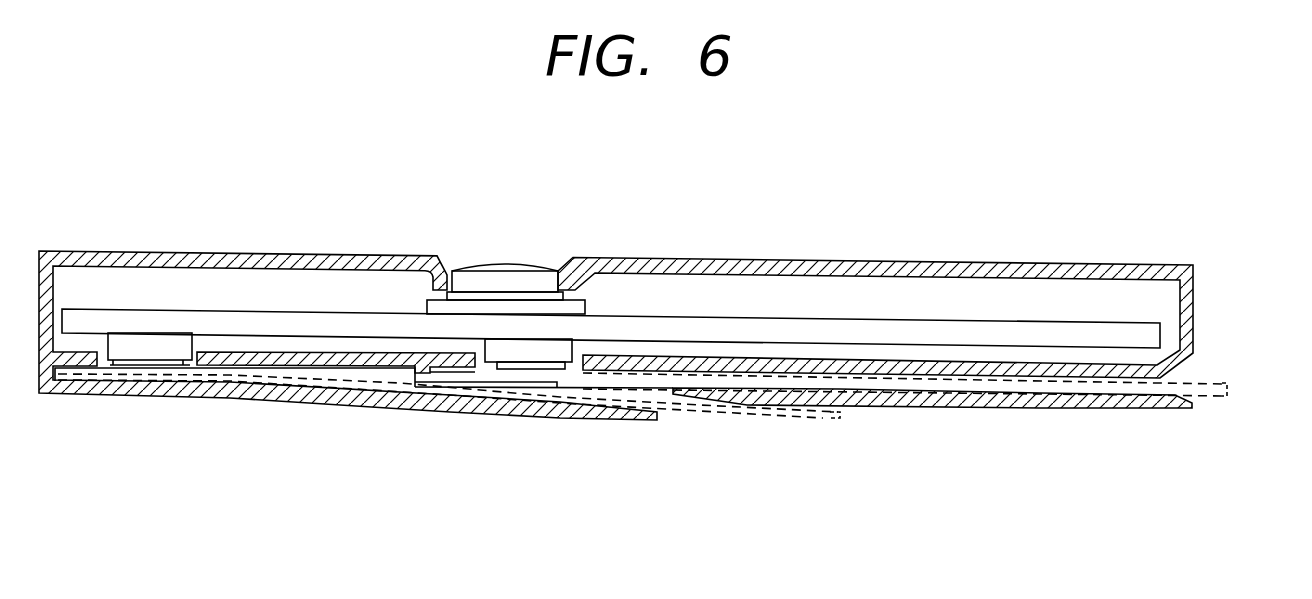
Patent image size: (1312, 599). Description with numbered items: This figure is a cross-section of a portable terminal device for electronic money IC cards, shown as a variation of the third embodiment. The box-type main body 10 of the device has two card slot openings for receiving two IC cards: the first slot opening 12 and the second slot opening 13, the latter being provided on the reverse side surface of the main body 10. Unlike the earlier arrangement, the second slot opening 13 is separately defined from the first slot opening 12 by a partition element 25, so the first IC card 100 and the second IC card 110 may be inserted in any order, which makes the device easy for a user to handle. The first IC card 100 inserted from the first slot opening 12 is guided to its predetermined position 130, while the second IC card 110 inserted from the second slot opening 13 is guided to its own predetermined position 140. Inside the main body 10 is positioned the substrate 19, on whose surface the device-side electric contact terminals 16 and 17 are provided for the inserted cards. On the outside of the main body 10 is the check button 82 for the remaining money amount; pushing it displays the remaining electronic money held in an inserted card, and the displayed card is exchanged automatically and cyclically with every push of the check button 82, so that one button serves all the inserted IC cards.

The main body 10 is at (240, 253).
The first slot opening 12 is at (1195, 364).
The substrate 19 is at (638, 328).
The check button 82 is at (500, 280).
The electric contact terminal 17 is at (151, 367).
The electric contact terminal 16 is at (520, 370).
The partition element 25 is at (577, 390).
The predetermined position 140 is at (68, 383).
The predetermined position 130 is at (433, 388).
The second slot opening 13 is at (663, 420).
The second IC card 110 is at (813, 420).
The first IC card 100 is at (1208, 392).